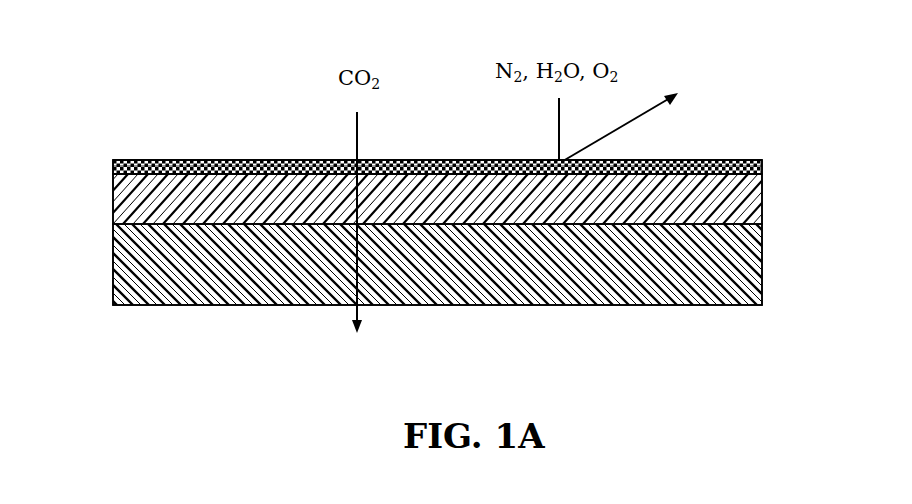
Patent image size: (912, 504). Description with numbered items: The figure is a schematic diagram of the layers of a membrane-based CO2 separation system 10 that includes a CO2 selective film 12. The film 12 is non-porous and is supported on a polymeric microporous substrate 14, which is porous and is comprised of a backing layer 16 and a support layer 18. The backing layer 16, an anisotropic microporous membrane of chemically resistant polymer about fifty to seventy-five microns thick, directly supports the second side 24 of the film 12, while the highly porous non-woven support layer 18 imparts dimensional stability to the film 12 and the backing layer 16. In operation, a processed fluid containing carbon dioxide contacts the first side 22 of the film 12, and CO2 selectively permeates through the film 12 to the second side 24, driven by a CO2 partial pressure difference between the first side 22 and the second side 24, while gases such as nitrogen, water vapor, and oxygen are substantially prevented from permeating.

The CO2 separation system 10 is at (183, 74).
The film 12 is at (100, 167).
The substrate 14 is at (438, 239).
The backing layer 16 is at (100, 208).
The support layer 18 is at (100, 275).
The first side 22 is at (722, 160).
The second side 24 is at (742, 177).